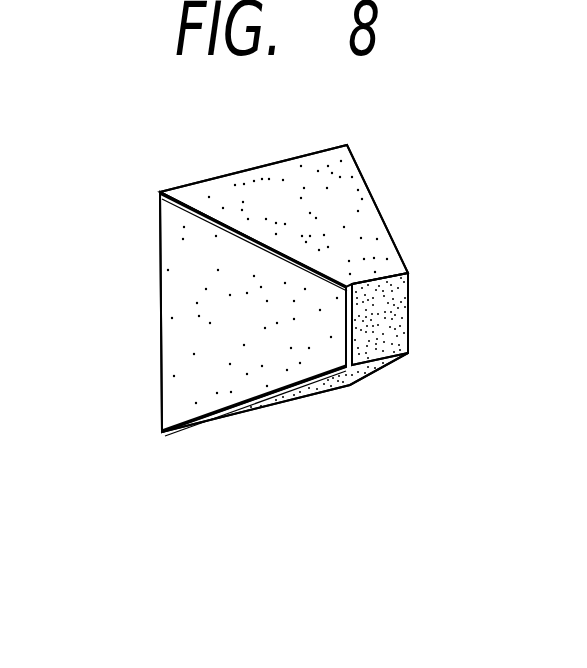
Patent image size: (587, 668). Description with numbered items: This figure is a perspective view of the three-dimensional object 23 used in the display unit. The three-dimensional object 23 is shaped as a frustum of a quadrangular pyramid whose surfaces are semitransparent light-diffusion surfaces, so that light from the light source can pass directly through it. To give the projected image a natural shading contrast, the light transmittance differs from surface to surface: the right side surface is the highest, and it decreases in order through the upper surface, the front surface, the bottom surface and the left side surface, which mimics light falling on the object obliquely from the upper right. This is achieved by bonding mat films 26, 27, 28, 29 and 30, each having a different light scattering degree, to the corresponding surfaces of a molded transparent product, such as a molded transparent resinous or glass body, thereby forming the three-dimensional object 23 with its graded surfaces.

The three-dimensional object 23 is at (368, 182).
The mat film 26 is at (243, 188).
The mat film 27 is at (172, 287).
The mat film 28 is at (400, 248).
The mat film 29 is at (393, 307).
The mat film 30 is at (342, 377).